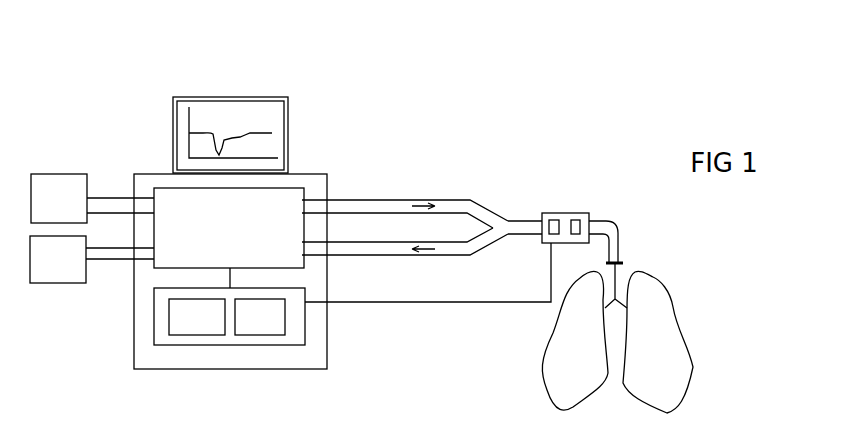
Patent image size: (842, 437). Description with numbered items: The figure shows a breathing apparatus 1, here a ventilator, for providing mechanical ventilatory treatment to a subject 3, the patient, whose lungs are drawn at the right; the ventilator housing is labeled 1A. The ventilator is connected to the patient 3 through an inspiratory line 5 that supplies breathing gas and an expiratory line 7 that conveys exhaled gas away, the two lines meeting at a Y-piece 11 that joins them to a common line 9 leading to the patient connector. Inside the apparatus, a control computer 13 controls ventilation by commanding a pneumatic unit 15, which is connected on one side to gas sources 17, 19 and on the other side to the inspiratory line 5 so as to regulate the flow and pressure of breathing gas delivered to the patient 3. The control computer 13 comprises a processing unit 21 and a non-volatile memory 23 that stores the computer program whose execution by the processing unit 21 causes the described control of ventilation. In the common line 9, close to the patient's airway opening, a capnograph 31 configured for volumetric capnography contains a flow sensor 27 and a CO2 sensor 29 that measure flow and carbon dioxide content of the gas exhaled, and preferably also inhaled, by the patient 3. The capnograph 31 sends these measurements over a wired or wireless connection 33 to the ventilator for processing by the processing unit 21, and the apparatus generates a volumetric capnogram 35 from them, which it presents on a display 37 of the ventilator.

The breathing apparatus 1 is at (398, 122).
The ventilator apparatus 1A is at (306, 174).
The subject 3 is at (667, 285).
The inspiratory line 5 is at (370, 200).
The expiratory line 7 is at (398, 242).
The common line 9 is at (522, 236).
The Y-piece 11 is at (495, 210).
The control computer 13 is at (197, 345).
The pneumatic unit 15 is at (229, 228).
The gas source 17 is at (92, 198).
The gas source 19 is at (92, 259).
The processing unit 21 is at (197, 317).
The non-volatile memory 23 is at (260, 317).
The flow sensor 27 is at (555, 213).
The CO2 sensor 29 is at (575, 213).
The capnograph 31 is at (563, 213).
The connection 33 is at (420, 303).
The volumetric capnogram 35 is at (250, 133).
The display 37 is at (278, 96).